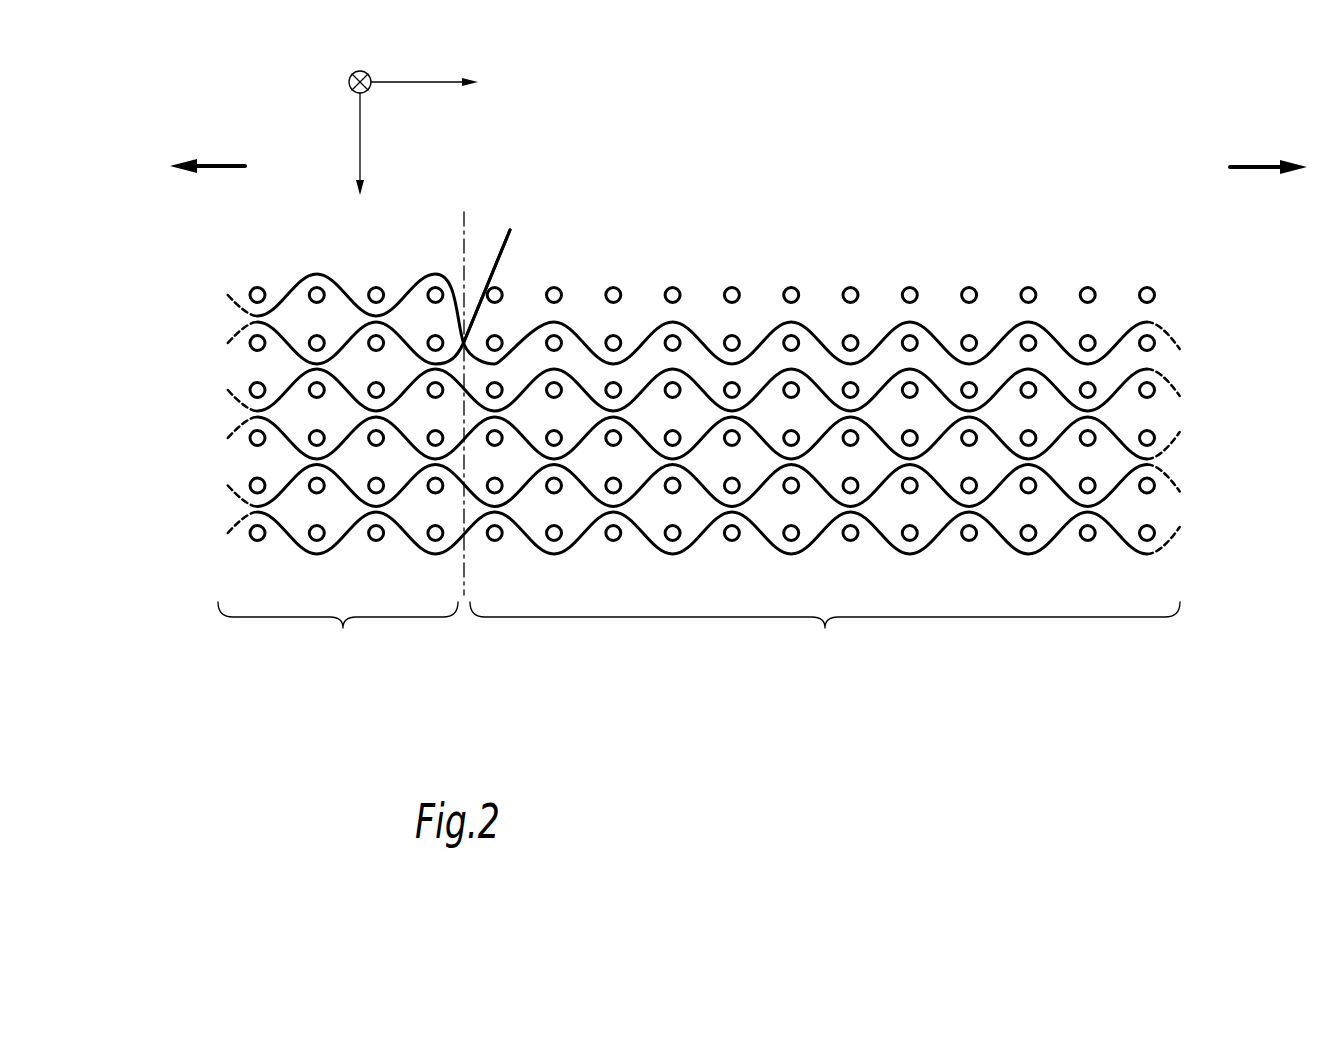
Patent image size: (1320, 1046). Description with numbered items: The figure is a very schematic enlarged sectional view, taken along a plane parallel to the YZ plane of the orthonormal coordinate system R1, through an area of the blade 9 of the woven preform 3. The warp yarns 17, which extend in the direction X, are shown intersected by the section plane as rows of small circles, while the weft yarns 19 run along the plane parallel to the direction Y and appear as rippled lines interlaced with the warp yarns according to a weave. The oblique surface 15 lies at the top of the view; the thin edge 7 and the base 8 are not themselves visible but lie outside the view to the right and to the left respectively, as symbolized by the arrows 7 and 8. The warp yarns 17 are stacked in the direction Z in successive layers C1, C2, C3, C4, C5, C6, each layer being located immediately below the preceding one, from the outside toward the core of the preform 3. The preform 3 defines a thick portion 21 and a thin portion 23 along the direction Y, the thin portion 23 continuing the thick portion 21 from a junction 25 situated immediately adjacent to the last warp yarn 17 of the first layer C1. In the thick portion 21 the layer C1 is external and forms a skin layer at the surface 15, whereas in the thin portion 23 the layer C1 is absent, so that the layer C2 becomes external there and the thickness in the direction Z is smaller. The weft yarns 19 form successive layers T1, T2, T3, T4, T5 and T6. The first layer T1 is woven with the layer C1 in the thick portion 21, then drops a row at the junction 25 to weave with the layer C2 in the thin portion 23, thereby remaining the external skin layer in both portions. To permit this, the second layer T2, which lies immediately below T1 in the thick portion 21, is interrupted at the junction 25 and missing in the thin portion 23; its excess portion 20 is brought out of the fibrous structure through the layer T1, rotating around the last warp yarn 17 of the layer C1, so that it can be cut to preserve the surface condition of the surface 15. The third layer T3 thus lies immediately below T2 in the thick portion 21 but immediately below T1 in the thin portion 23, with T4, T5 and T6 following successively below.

The preform 3 is at (862, 207).
The thin edge 7 is at (1268, 152).
The base 8 is at (207, 151).
The blade 9 is at (915, 510).
The oblique surface 15 is at (999, 298).
The warp yarns 17 is at (1087, 336).
The weft yarns 19 is at (350, 333).
The excess portion 20 is at (497, 262).
The thick portion 21 is at (338, 630).
The thin portion 23 is at (825, 630).
The junction 25 is at (460, 577).
The orthonormal coordinate system R1 is at (410, 128).
The first layer of weft yarns T1 is at (540, 320).
The second layer of weft yarns T2 is at (297, 333).
The third layer of weft yarns T3 is at (1172, 386).
The fourth layer of weft yarns T4 is at (1173, 440).
The fifth layer of weft yarns T5 is at (1172, 478).
The sixth layer of weft yarns T6 is at (1170, 548).
The first layer of warp yarns C1 is at (200, 295).
The second layer of warp yarns C2 is at (200, 343).
The third layer of warp yarns C3 is at (200, 390).
The fourth layer of warp yarns C4 is at (200, 438).
The fifth layer of warp yarns C5 is at (200, 486).
The sixth layer of warp yarns C6 is at (200, 533).